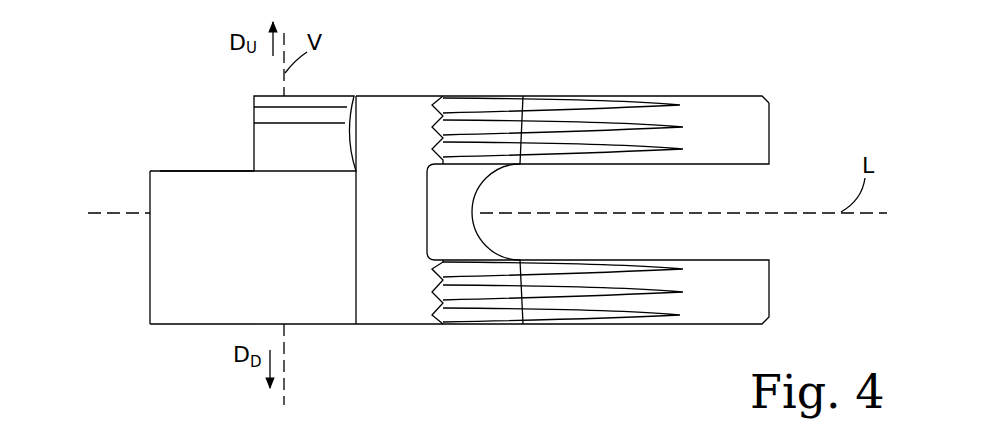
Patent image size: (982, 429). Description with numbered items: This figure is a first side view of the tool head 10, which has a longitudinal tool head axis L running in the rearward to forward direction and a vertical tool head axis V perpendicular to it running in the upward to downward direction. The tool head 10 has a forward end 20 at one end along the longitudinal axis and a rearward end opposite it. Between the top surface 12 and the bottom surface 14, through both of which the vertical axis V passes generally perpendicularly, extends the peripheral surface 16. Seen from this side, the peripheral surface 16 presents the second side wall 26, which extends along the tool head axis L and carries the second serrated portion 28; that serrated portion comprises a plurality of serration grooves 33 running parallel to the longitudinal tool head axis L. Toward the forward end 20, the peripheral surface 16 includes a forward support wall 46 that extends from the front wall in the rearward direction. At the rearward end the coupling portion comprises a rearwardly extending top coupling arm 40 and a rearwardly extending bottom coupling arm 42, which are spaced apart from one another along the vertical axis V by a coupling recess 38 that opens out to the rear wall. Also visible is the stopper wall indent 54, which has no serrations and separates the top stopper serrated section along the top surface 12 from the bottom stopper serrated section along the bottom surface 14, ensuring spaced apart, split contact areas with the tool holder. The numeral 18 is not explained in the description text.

The tool head 10 is at (698, 83).
The top surface 12 is at (388, 96).
The bottom surface 14 is at (215, 326).
The peripheral surface 16 is at (168, 280).
The base top surface 18 is at (203, 171).
The forward end 20 is at (133, 140).
The second side wall 26 is at (573, 122).
The second serrated portion 28 is at (584, 292).
The serration grooves 33 is at (623, 157).
The coupling recess 38 is at (758, 225).
The top coupling arm 40 is at (752, 128).
The bottom coupling arm 42 is at (757, 281).
The forward support wall 46 is at (292, 308).
The stopper wall indent 54 is at (466, 200).